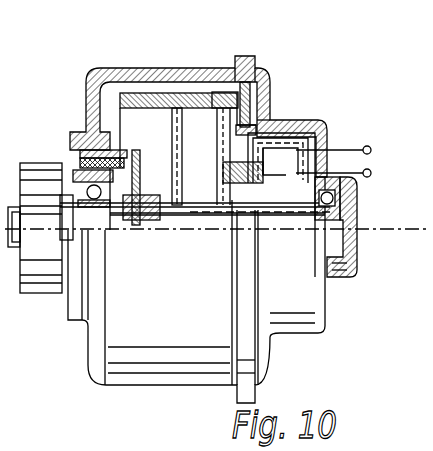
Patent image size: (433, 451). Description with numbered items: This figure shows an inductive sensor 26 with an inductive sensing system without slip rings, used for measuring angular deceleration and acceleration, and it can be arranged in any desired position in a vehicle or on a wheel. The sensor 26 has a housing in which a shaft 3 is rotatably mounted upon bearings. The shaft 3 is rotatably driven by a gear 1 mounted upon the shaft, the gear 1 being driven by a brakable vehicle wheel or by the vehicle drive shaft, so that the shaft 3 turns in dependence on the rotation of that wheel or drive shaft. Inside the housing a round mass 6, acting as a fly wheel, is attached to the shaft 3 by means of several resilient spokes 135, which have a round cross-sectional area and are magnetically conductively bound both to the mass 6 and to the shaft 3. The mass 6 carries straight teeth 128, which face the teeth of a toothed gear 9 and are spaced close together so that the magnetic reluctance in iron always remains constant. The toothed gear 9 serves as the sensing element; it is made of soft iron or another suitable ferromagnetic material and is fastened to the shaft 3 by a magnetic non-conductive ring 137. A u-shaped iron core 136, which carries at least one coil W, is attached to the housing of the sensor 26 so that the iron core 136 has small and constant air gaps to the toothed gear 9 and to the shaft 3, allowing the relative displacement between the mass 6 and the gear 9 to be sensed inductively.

The gear 1 is at (43, 162).
The inductive sensor 26 is at (84, 99).
The mass 6 is at (127, 93).
The resilient spokes 135 is at (172, 108).
The straight teeth 128 is at (225, 107).
The toothed gear 9 is at (240, 108).
The u-shaped iron core 136 is at (280, 137).
The coil W is at (337, 147).
The magnetic non-conductive ring 137 is at (252, 205).
The shaft 3 is at (158, 222).